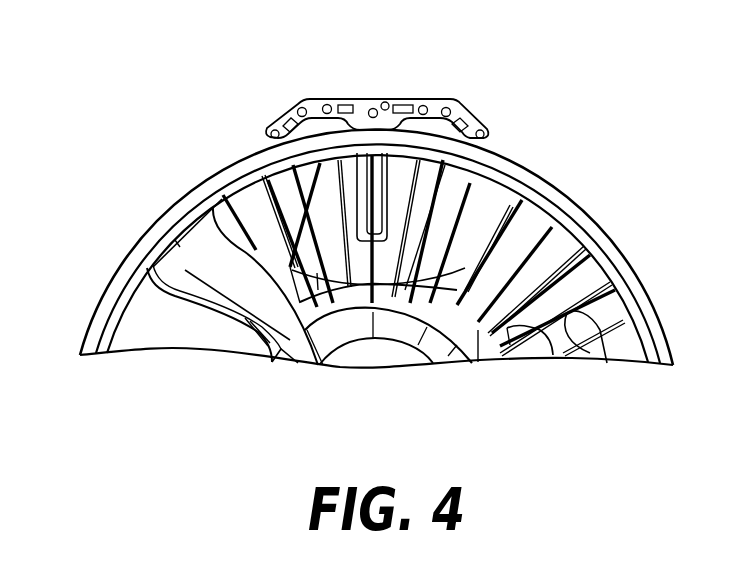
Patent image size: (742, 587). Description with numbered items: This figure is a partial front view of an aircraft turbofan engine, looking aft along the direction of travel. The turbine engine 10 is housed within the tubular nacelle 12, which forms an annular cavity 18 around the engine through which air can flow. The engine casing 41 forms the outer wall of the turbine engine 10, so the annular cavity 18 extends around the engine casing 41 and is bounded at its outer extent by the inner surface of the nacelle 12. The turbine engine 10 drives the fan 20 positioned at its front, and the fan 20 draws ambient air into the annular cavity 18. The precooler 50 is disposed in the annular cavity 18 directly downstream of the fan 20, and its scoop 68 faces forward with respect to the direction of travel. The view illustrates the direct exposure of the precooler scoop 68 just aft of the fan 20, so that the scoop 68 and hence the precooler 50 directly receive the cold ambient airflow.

The turbine engine 10 is at (338, 362).
The nacelle 12 is at (632, 278).
The annular cavity 18 is at (543, 253).
The fan 20 is at (607, 363).
The engine casing 41 is at (470, 333).
The precooler 50 is at (405, 238).
The scoop 68 is at (367, 212).